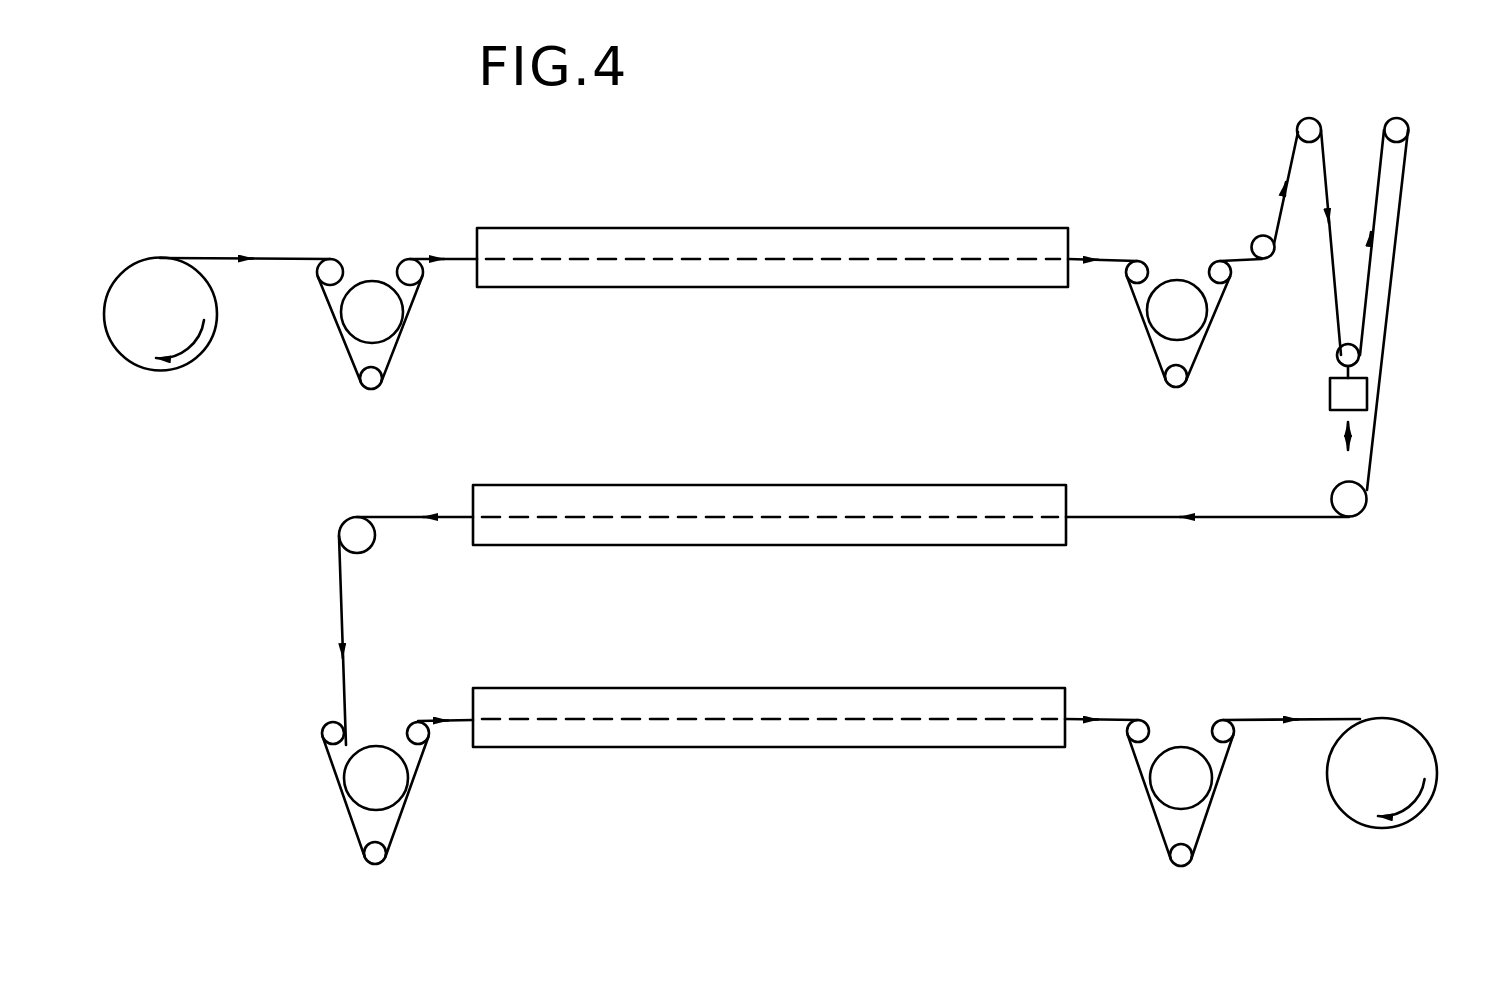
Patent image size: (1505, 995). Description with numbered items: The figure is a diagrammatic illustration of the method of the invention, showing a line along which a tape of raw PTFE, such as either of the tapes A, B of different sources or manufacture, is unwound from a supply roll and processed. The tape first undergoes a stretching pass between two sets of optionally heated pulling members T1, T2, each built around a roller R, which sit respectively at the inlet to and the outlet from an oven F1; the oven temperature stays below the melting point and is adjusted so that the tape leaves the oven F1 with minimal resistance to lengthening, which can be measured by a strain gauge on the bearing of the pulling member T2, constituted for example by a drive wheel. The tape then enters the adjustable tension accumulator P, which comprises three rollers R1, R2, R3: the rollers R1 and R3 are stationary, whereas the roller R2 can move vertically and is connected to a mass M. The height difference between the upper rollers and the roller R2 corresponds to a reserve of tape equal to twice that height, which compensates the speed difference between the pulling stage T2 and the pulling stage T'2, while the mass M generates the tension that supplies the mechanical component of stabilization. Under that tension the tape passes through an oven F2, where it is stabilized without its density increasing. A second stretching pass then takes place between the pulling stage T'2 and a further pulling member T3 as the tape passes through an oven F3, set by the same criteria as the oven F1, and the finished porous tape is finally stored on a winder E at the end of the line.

The tape A is at (287, 258).
The tape B is at (340, 637).
The roller R is at (378, 291).
The pulling member T1 is at (409, 338).
The pulling member T2 is at (1132, 327).
The pulling stage T'2 is at (383, 805).
The pulling member T3 is at (1140, 804).
The oven F1 is at (771, 238).
The oven F2 is at (771, 496).
The oven F3 is at (771, 699).
The roller R1 is at (1299, 123).
The roller R2 is at (1338, 356).
The roller R3 is at (1406, 122).
The mass M is at (1343, 396).
The adjustable tension accumulator P is at (1351, 297).
The winder E is at (1435, 726).